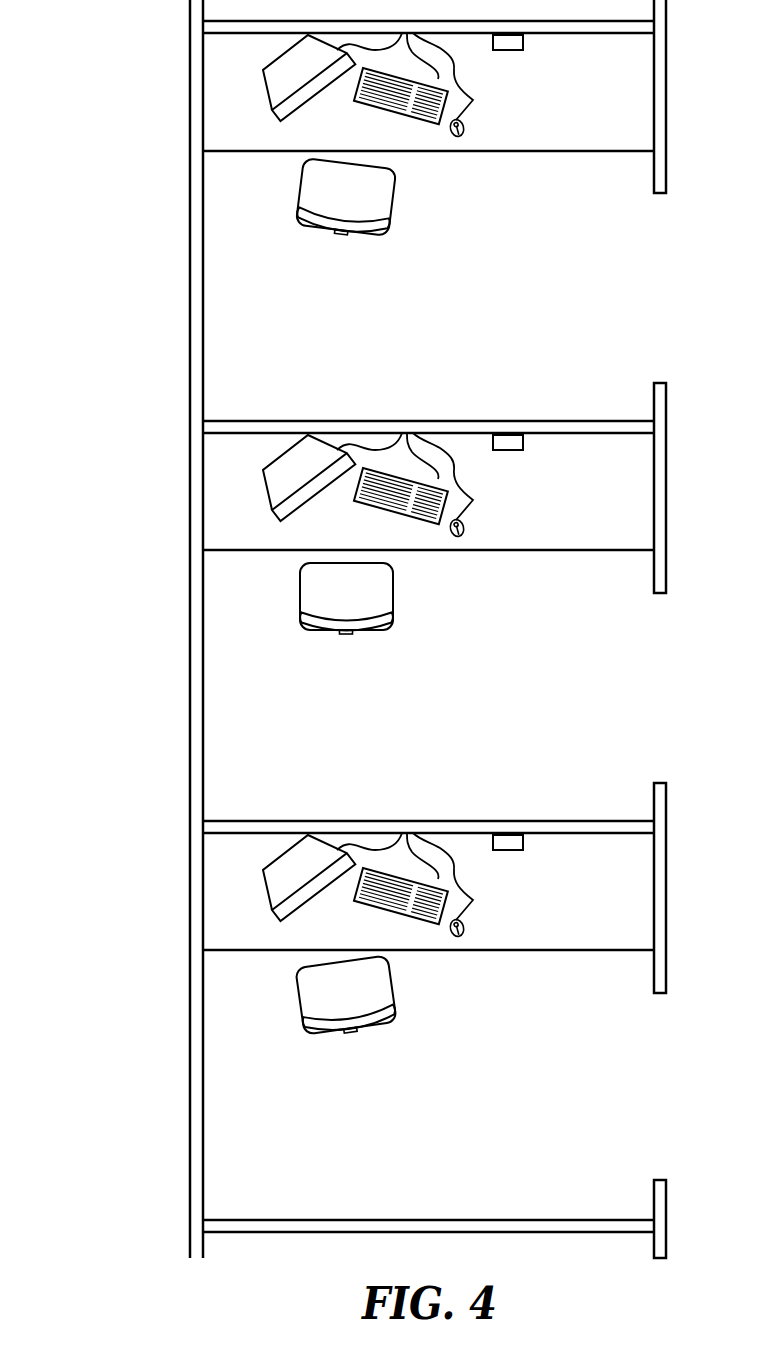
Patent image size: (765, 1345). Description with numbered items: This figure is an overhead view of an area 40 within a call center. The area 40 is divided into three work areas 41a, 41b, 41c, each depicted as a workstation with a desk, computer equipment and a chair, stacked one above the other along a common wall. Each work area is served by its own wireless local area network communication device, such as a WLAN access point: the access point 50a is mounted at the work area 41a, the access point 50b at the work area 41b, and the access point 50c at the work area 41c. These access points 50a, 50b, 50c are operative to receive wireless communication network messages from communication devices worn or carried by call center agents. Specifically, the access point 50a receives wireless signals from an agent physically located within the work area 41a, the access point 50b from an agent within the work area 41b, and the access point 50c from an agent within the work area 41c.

The area within a call center 40 is at (170, 513).
The work area 41a is at (450, 1100).
The work area 41b is at (450, 700).
The work area 41c is at (450, 300).
The wireless local area network communication device 50a is at (522, 850).
The wireless local area network communication device 50b is at (522, 450).
The wireless local area network communication device 50c is at (522, 50).